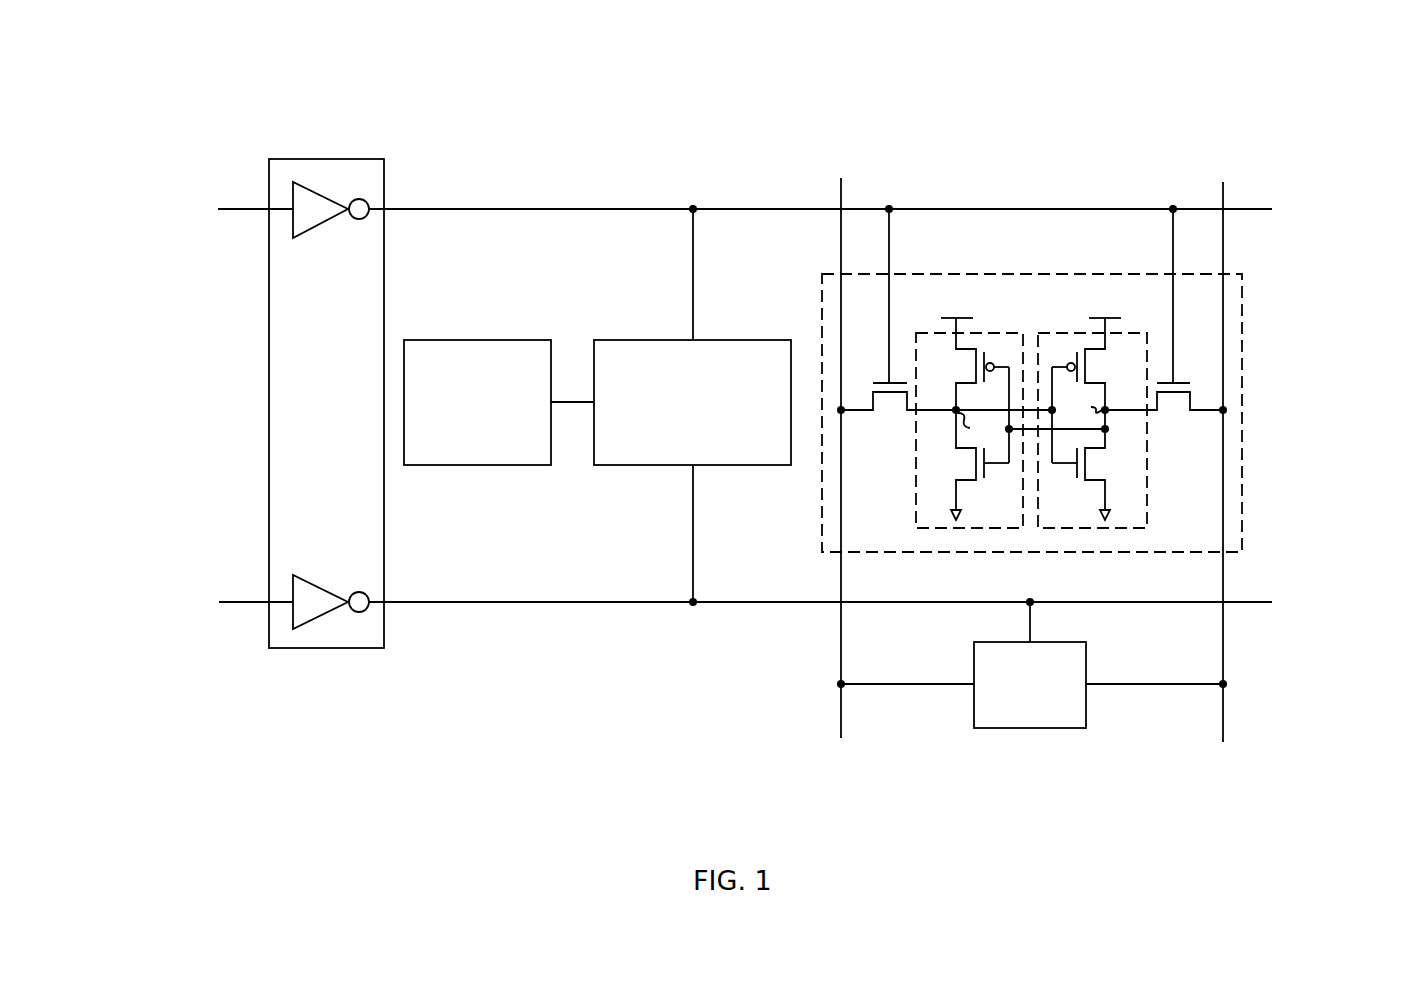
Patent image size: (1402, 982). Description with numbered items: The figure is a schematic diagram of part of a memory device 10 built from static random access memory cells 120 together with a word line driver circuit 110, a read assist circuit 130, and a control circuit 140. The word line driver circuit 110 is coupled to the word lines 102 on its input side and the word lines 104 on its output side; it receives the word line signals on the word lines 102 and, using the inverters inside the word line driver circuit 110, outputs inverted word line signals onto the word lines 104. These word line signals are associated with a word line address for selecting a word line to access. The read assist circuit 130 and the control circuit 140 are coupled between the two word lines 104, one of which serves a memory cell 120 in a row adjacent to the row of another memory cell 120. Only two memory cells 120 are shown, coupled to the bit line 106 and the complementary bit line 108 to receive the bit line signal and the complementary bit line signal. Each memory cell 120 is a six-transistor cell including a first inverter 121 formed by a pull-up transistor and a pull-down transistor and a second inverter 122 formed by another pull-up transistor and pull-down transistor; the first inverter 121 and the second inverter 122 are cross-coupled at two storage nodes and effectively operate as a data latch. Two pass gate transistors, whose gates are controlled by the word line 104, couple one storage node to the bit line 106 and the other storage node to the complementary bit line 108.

The memory device 10 is at (214, 73).
The word line 102 is at (237, 209).
The word line 104 is at (513, 209).
The bit line 106 is at (841, 665).
The complementary bit line 108 is at (1223, 664).
The word line driver circuit 110 is at (320, 159).
The memory cell 120 is at (1072, 466).
The first inverter 121 is at (916, 493).
The second inverter 122 is at (1147, 493).
The read assist circuit 130 is at (712, 446).
The control circuit 140 is at (497, 446).